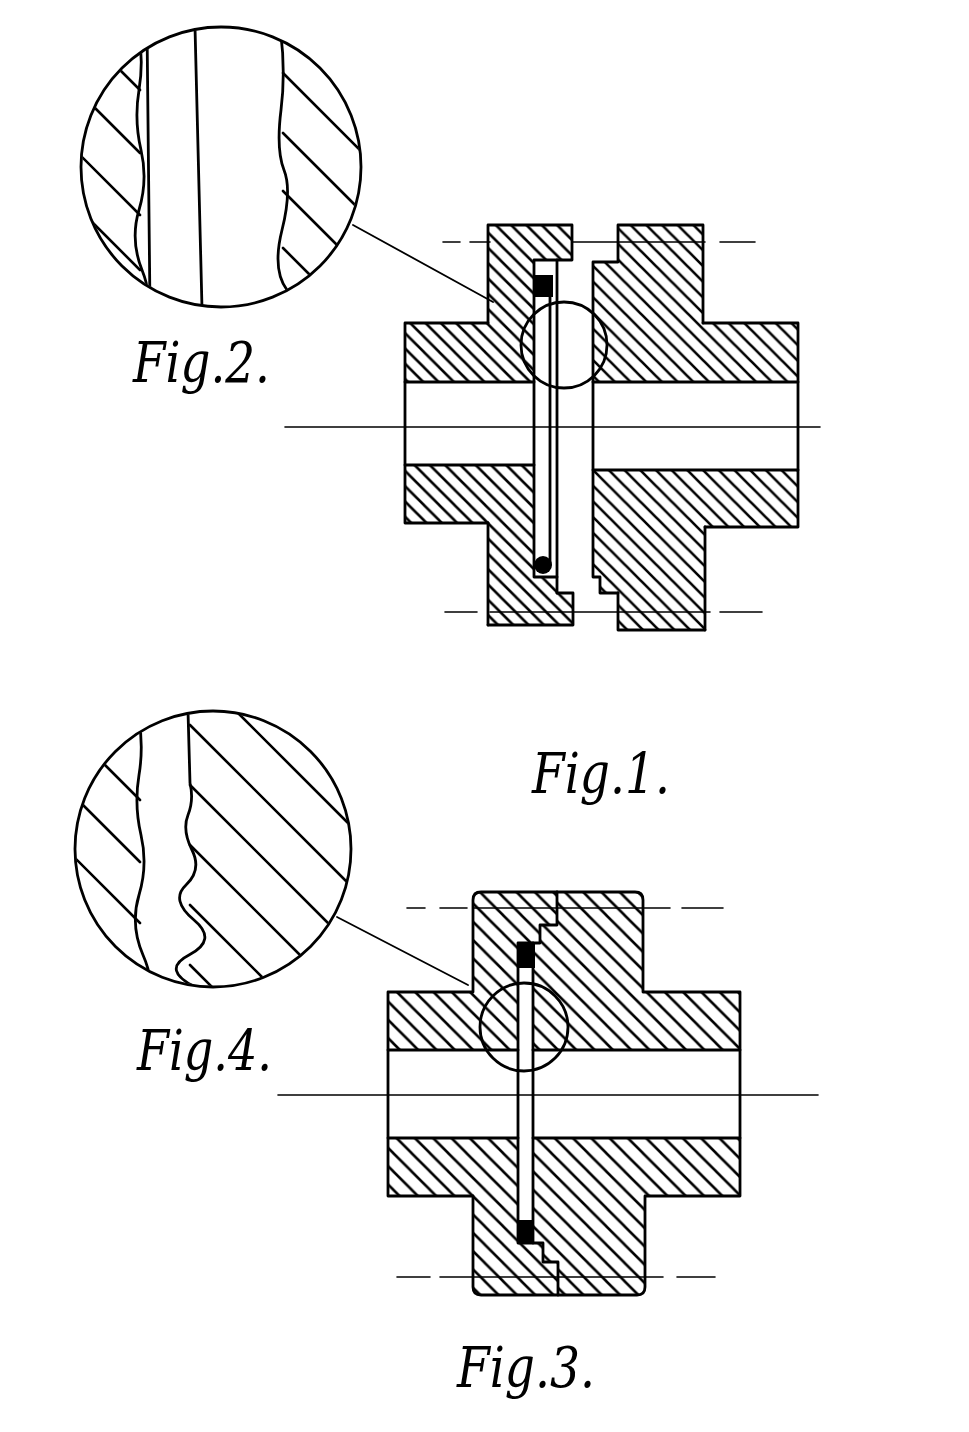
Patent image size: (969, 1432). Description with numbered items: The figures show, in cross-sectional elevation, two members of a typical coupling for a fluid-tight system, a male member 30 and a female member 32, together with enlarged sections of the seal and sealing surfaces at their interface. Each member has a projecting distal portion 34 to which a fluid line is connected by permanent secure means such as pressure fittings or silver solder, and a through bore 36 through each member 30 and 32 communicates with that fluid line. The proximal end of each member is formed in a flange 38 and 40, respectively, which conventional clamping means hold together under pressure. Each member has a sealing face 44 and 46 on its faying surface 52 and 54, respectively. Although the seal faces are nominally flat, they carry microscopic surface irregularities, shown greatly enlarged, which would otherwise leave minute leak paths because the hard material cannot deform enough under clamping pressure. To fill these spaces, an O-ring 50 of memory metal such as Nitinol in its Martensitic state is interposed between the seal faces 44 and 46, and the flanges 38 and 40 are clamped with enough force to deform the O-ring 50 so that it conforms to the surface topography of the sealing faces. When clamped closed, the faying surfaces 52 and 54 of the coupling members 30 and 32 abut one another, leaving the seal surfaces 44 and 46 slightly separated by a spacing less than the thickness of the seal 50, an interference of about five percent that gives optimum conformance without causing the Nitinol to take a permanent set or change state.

The male member 30 is at (732, 288).
The female member 32 is at (478, 256).
The projecting distal portion 34 is at (403, 360).
The through bore 36 is at (412, 458).
The flange 38 is at (656, 222).
The flange 40 is at (530, 223).
The sealing face 44 is at (588, 278).
The sealing face 46 is at (553, 300).
The O-ring 50 is at (553, 561).
The faying surface 52 is at (613, 618).
The faying surface 54 is at (576, 618).